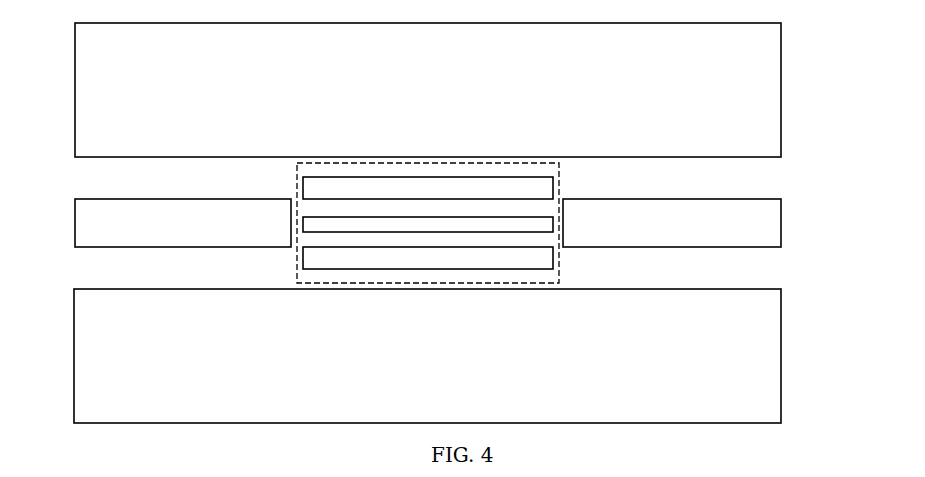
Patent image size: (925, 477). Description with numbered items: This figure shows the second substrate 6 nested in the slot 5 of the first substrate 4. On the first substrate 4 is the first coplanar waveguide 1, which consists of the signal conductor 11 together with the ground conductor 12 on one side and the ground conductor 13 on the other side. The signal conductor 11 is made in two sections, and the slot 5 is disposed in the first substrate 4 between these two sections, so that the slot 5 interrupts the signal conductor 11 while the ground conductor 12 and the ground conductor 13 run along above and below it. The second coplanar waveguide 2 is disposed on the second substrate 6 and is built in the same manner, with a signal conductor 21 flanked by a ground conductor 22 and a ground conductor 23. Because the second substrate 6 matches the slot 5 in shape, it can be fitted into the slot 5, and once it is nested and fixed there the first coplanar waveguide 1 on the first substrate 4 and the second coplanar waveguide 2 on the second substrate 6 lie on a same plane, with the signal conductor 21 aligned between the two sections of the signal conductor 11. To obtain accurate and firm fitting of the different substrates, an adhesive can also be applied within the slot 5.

The first coplanar waveguide 1 is at (872, 127).
The signal conductor 11 is at (763, 221).
The ground conductor 12 is at (763, 152).
The ground conductor 13 is at (763, 302).
The second coplanar waveguide 2 is at (493, 226).
The signal conductor 21 is at (543, 225).
The ground conductor 22 is at (543, 189).
The ground conductor 23 is at (475, 261).
The first substrate 4 is at (135, 184).
The slot 5 is at (388, 163).
The second substrate 6 is at (350, 212).